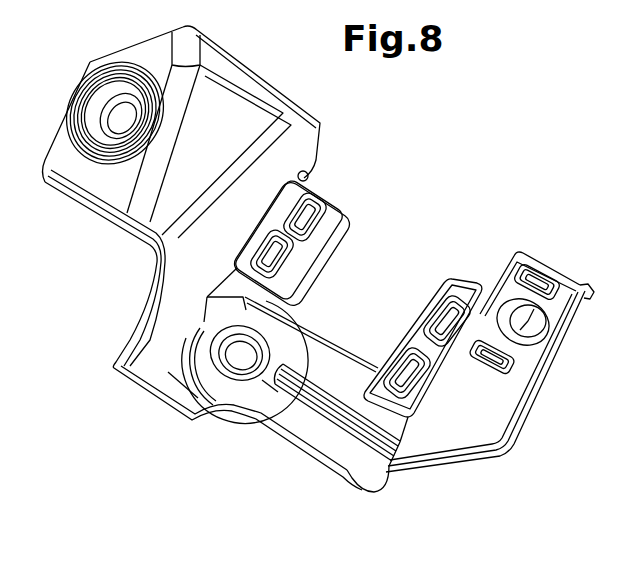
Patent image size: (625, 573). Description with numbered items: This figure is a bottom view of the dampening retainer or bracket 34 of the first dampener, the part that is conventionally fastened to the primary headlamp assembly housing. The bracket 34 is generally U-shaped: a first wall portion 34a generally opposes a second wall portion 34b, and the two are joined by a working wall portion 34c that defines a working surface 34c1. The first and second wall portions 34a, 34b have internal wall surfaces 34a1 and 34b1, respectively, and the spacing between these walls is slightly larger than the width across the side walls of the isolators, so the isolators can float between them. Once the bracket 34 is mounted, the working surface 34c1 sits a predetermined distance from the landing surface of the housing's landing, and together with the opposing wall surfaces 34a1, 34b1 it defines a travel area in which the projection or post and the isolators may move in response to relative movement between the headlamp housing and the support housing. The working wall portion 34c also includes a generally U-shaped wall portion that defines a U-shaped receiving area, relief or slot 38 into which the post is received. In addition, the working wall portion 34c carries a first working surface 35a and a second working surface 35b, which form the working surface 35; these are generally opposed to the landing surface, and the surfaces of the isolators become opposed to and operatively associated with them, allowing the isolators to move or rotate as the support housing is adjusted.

The dampening retainer or bracket 34 is at (493, 421).
The first wall portion 34a is at (366, 460).
The internal wall surface 34a1 is at (378, 508).
The second wall portion 34b is at (146, 307).
The internal wall surface 34b1 is at (140, 247).
The working wall portion 34c is at (160, 392).
The working surface 34c1 is at (333, 368).
The working surface 35 is at (428, 298).
The first working surface 35a is at (475, 278).
The second working surface 35b is at (318, 178).
The U-shaped receiving area, relief or slot 38 is at (389, 248).